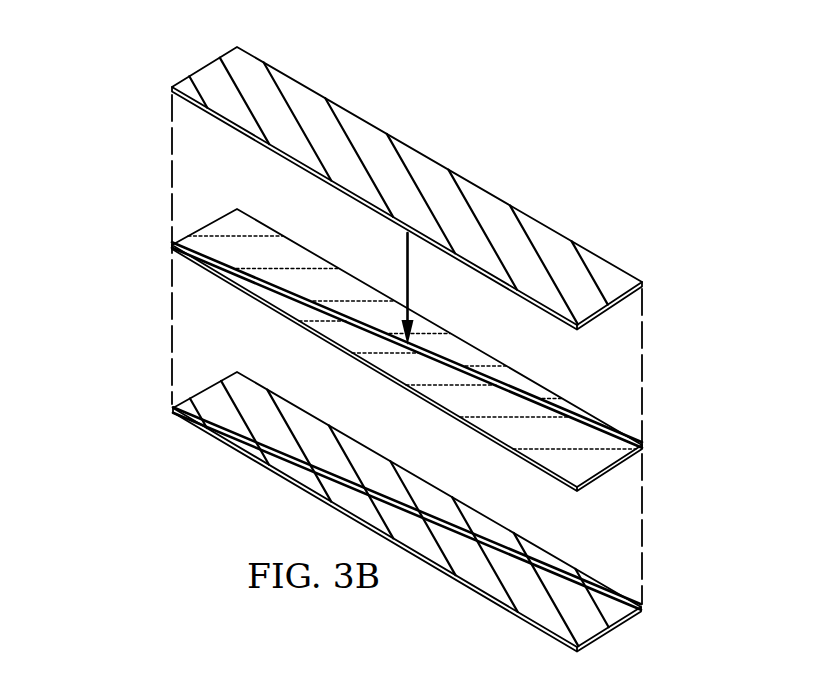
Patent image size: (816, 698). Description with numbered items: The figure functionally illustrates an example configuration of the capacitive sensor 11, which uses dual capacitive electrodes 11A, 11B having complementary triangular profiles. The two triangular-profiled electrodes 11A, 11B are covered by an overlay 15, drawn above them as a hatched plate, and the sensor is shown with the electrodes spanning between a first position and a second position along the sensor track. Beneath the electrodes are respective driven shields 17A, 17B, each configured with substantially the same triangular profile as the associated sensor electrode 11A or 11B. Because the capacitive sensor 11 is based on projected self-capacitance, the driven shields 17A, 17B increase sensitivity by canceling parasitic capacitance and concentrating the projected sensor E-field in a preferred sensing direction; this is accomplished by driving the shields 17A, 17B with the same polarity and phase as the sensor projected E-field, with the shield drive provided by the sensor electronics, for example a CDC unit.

The capacitive sensor 11 is at (452, 139).
The overlay 15 is at (205, 66).
The triangular-profiled electrode 11A is at (207, 228).
The triangular-profiled electrode 11B is at (614, 467).
The driven shield 17A is at (233, 374).
The driven shield 17B is at (607, 629).